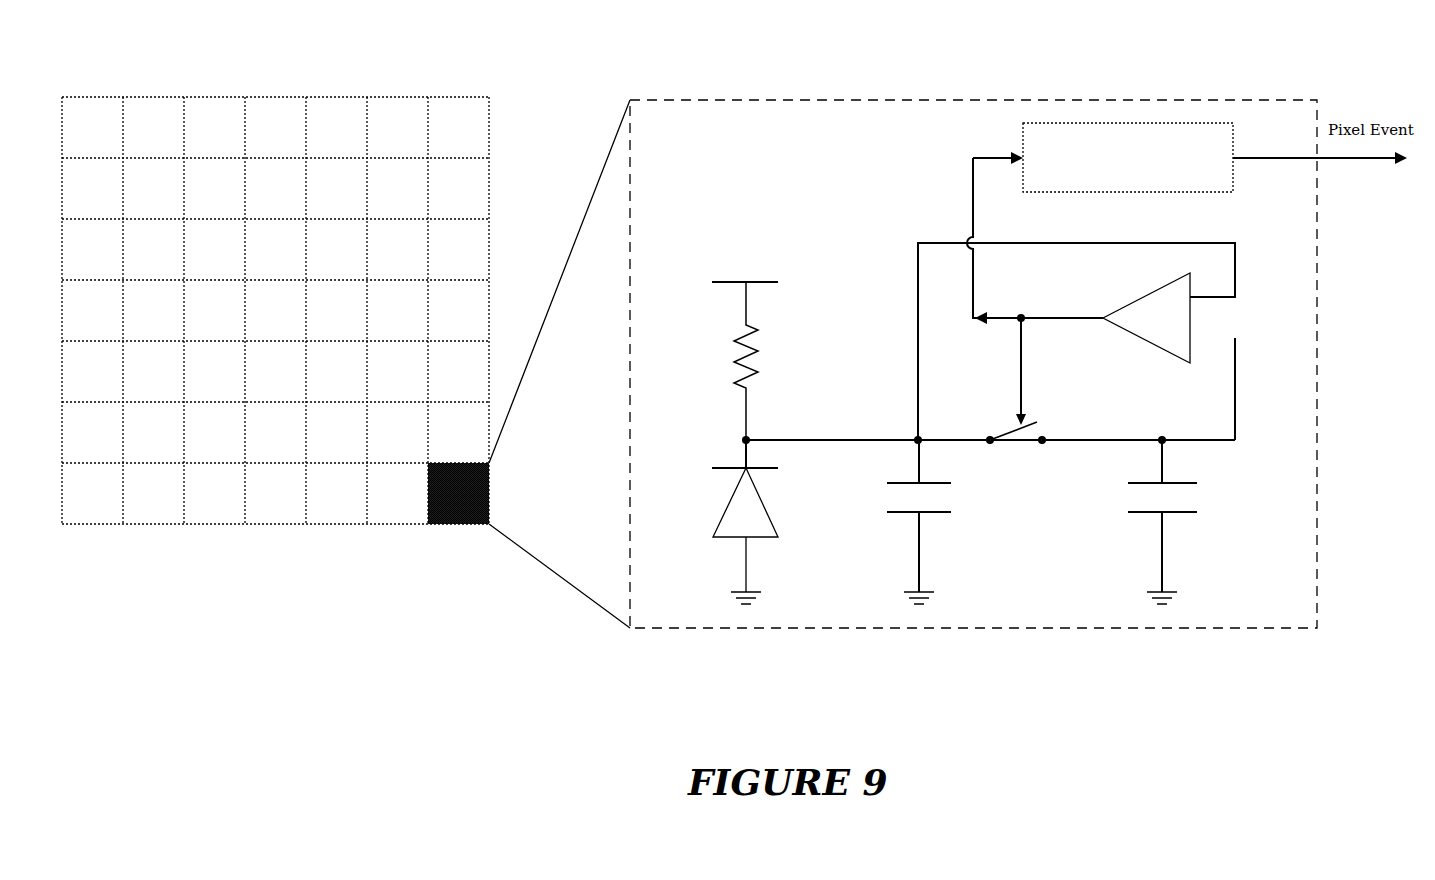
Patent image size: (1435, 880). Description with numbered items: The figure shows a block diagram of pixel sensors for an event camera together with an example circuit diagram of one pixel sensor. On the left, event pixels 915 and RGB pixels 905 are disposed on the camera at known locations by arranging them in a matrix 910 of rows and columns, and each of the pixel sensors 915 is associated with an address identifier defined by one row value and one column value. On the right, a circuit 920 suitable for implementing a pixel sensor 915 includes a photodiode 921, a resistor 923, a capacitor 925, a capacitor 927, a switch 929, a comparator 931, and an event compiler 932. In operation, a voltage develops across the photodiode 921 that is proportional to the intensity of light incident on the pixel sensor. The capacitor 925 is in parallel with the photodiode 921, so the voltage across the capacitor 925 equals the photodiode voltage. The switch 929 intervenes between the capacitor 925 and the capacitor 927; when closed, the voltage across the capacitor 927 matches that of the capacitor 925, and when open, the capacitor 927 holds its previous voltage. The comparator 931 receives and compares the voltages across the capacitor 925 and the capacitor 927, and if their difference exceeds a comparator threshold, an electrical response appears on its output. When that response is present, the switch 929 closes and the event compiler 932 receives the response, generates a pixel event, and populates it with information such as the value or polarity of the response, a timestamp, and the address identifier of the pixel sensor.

The RGB pixels 905 is at (275, 310).
The matrix 910 is at (244, 97).
The event pixels 915 is at (275, 310).
The circuit 920 is at (678, 100).
The photodiode 921 is at (720, 522).
The resistor 923 is at (734, 361).
The capacitor 925 is at (897, 522).
The capacitor 927 is at (1142, 522).
The switch 929 is at (1000, 444).
The comparator 931 is at (1146, 318).
The event compiler 932 is at (1128, 157).